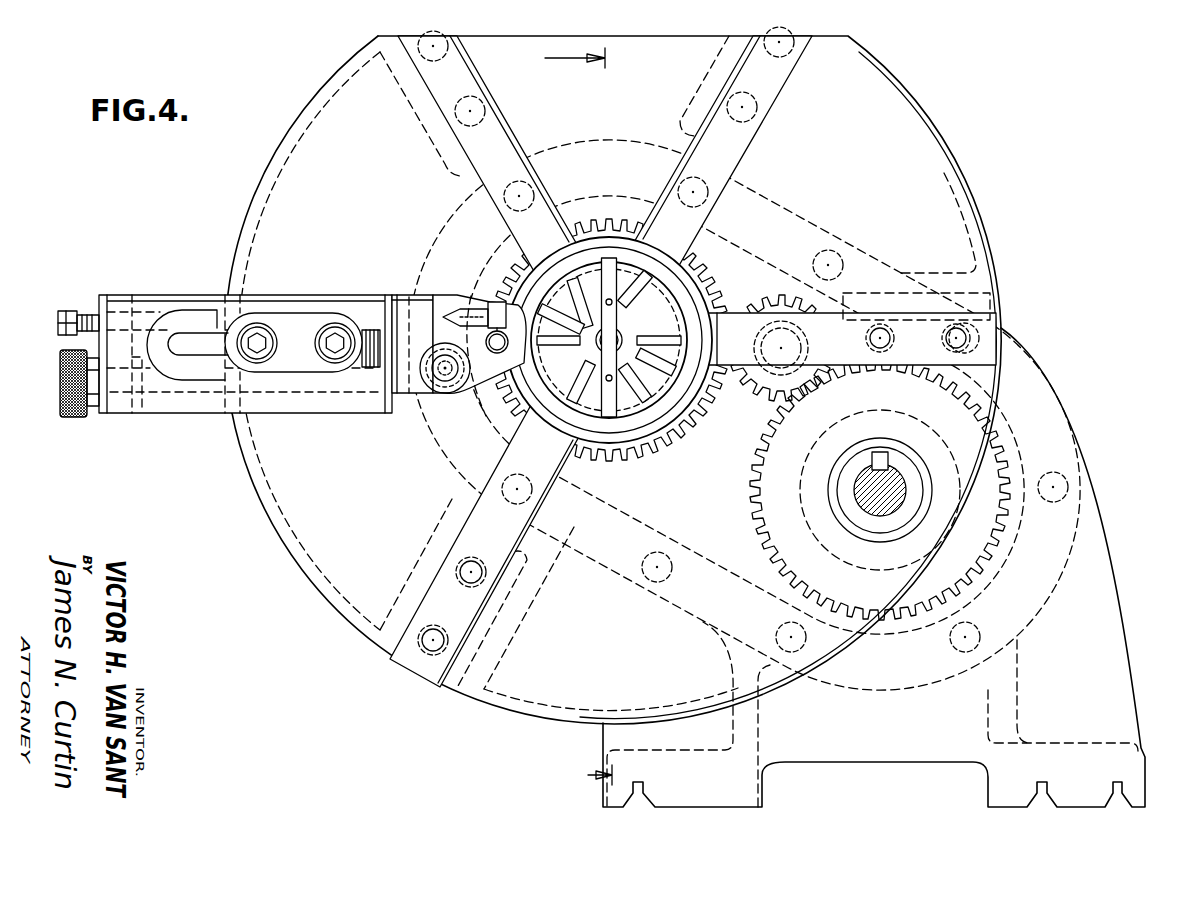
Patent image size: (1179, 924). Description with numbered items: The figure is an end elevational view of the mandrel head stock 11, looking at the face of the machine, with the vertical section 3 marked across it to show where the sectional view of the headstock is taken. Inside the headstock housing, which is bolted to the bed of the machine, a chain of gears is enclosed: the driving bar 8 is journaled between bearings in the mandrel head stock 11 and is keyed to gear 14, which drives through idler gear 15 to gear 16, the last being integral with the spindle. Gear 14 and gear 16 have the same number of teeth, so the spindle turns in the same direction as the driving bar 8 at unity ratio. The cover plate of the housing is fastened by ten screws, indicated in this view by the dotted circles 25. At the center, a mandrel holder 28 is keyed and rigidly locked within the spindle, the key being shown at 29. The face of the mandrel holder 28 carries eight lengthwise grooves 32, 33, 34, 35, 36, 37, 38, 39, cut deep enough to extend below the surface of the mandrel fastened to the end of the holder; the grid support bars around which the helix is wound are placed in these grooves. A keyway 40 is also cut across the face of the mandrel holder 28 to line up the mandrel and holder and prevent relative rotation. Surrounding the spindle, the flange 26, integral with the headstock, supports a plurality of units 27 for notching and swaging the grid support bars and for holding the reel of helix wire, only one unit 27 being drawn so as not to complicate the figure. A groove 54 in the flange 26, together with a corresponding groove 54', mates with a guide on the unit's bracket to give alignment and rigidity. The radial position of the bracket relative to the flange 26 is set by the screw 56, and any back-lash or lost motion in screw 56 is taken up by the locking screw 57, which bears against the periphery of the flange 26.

The vertical section 3— 3 is at (588, 418).
The driving bar 8 is at (858, 489).
The mandrel head stock 11 is at (1110, 618).
The gear 14 is at (748, 478).
The idler gear 15 is at (764, 298).
The gear 16 is at (688, 441).
The dotted circles 25 is at (1062, 488).
The flange 26 is at (968, 197).
The unit 27 is at (177, 295).
The mandrel holder 28 is at (673, 300).
The key 29 is at (623, 329).
The lengthwise groove 32 is at (558, 351).
The lengthwise groove 33 is at (560, 319).
The lengthwise groove 34 is at (578, 287).
The lengthwise groove 35 is at (647, 284).
The lengthwise groove 36 is at (609, 340).
The lengthwise groove 37 is at (659, 348).
The lengthwise groove 38 is at (639, 382).
The lengthwise groove 39 is at (574, 381).
The keyway 40 is at (627, 375).
The groove 54 is at (485, 359).
The radial arm 54' is at (732, 148).
The screw 56 is at (204, 396).
The locking screw 57 is at (99, 296).